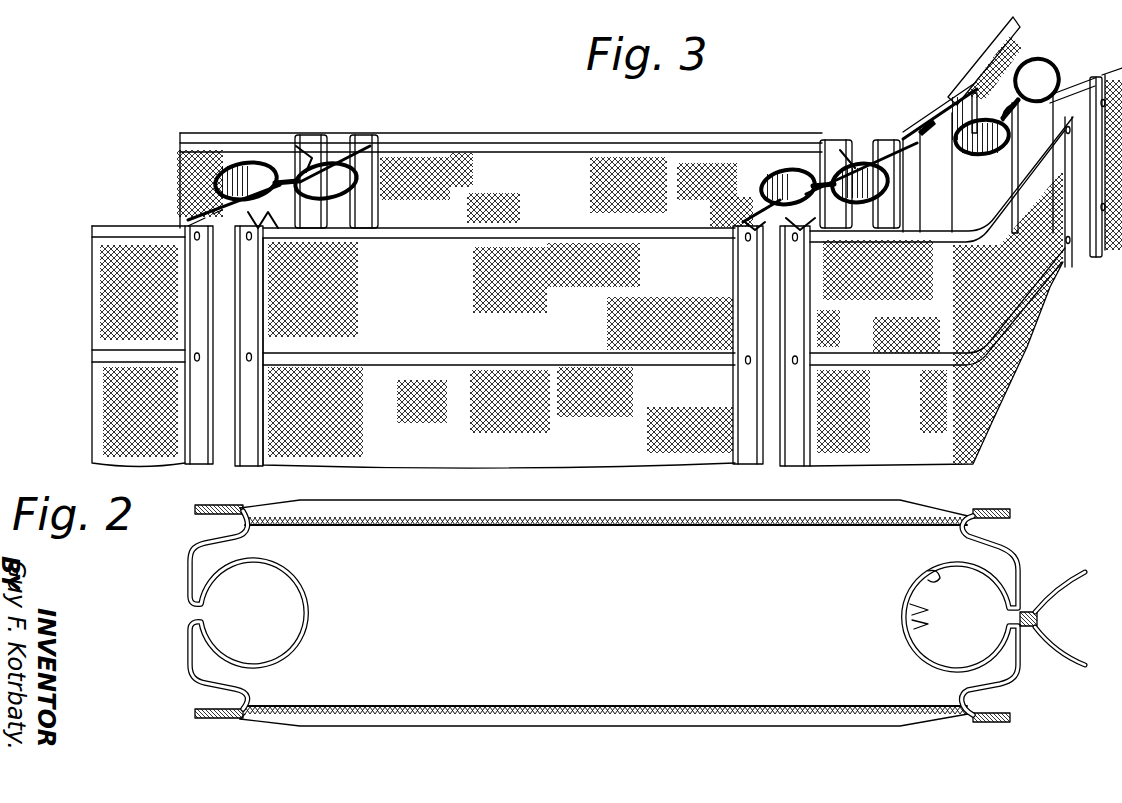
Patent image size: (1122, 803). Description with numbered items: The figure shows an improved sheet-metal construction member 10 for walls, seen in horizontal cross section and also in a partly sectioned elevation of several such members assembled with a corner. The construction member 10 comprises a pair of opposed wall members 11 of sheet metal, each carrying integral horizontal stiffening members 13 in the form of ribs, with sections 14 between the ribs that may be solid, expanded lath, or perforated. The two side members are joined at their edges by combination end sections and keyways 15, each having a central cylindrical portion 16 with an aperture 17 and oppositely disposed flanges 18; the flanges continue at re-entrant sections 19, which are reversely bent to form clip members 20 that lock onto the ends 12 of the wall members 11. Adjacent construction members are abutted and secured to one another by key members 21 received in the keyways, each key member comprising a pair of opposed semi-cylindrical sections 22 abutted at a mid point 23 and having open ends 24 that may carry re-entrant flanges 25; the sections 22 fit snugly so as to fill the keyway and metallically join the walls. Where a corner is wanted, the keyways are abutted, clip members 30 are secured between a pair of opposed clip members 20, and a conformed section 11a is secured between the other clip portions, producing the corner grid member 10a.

In FIG. 2, the construction member 10 is at (604, 613).
In FIG. 3, the corner grid member 10a is at (1012, 133).
In FIG. 3, the wall member 11 is at (497, 447).
In FIG. 2, the wall member 11 is at (622, 525).
In FIG. 3, the corner section 11a is at (1000, 375).
In FIG. 3, the end 12 is at (192, 226).
In FIG. 2, the end 12 is at (232, 510).
In FIG. 3, the stiffening member 13 is at (110, 226).
In FIG. 2, the stiffening member 13 is at (688, 501).
In FIG. 3, the section 14 is at (522, 165).
In FIG. 3, the combination end section and keyway 15 is at (250, 163).
In FIG. 2, the combination end section and keyway 15 is at (286, 606).
In FIG. 3, the central cylindrical portion 16 is at (352, 198).
In FIG. 2, the central cylindrical portion 16 is at (307, 614).
In FIG. 2, the aperture 17 is at (190, 613).
In FIG. 3, the flange 18 is at (288, 160).
In FIG. 2, the flange 18 is at (188, 575).
In FIG. 3, the re-entrant section 19 is at (375, 145).
In FIG. 2, the re-entrant section 19 is at (203, 540).
In FIG. 3, the clip member 20 is at (318, 135).
In FIG. 2, the clip member 20 is at (197, 508).
In FIG. 2, the key member 21 is at (948, 632).
In FIG. 3, the semi-cylindrical section 22 is at (185, 177).
In FIG. 2, the semi-cylindrical section 22 is at (940, 671).
In FIG. 2, the mid point 23 is at (1030, 611).
In FIG. 2, the open end 24 is at (928, 576).
In FIG. 2, the re-entrant flange 25 is at (906, 619).
In FIG. 3, the clip member 30 is at (915, 130).